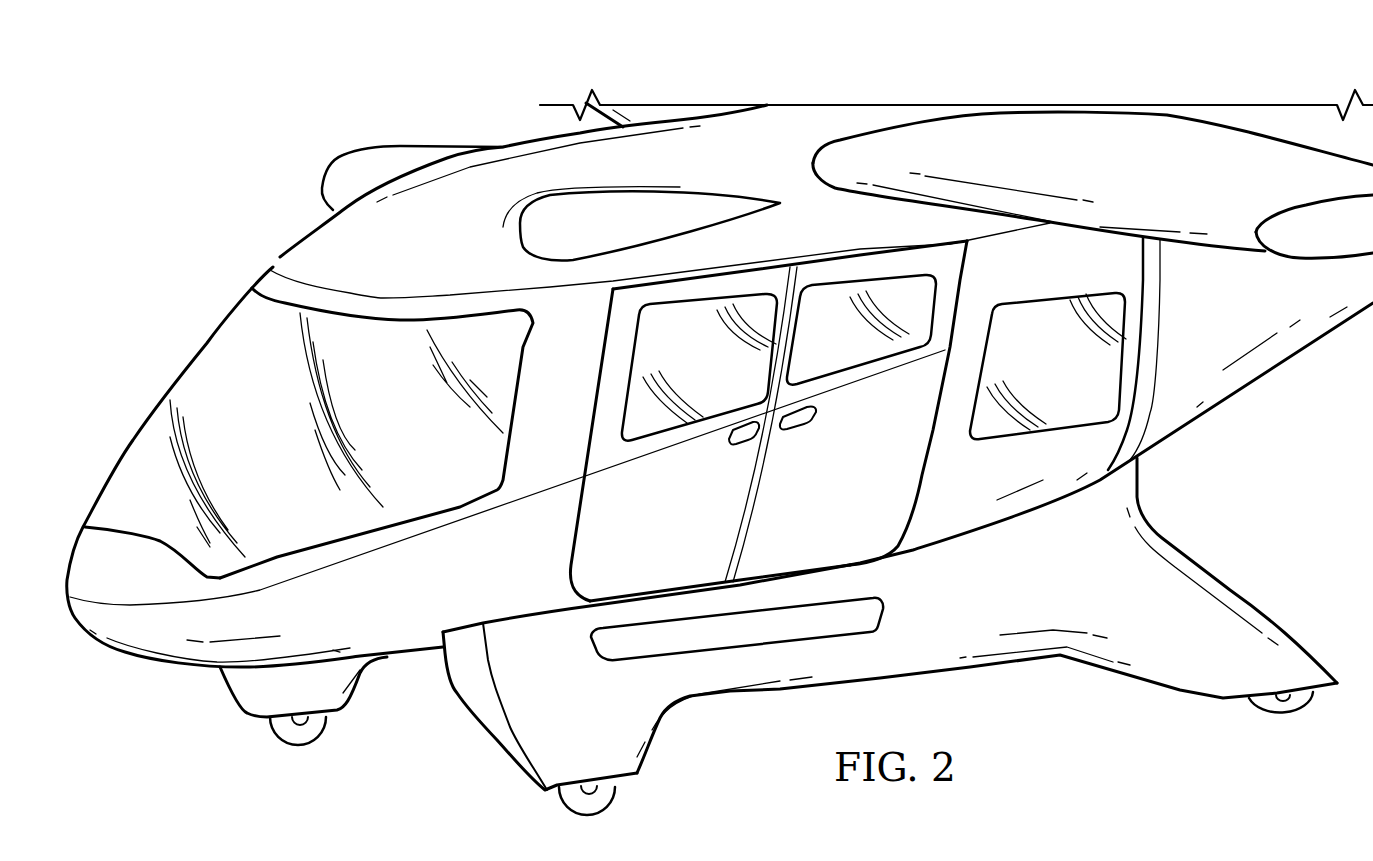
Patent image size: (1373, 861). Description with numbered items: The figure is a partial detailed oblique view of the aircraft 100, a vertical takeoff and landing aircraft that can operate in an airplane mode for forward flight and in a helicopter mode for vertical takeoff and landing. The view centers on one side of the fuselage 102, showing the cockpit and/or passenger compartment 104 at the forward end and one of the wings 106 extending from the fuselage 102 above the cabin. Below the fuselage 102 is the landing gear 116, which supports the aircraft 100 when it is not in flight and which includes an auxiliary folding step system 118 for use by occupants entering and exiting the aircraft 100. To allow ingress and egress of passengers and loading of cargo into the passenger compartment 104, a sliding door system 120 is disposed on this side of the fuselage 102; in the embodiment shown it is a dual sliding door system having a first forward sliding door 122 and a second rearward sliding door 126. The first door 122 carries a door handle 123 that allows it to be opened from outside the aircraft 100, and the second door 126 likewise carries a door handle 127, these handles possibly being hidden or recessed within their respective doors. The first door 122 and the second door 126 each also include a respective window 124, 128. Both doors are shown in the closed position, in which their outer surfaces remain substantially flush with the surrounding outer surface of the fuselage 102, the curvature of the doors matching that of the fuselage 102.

The aircraft 100 is at (258, 128).
The fuselage 102 is at (169, 672).
The cockpit and/or passenger compartment 104 is at (213, 330).
The wings 106 is at (1232, 253).
The landing gear 116 is at (488, 731).
The auxiliary folding step system 118 is at (797, 627).
The sliding door system 120 is at (769, 409).
The first forward sliding door 122 is at (583, 556).
The door handle 123 is at (740, 444).
The window 124 is at (764, 308).
The second rearward sliding door 126 is at (904, 476).
The door handle 127 is at (802, 408).
The window 128 is at (925, 290).